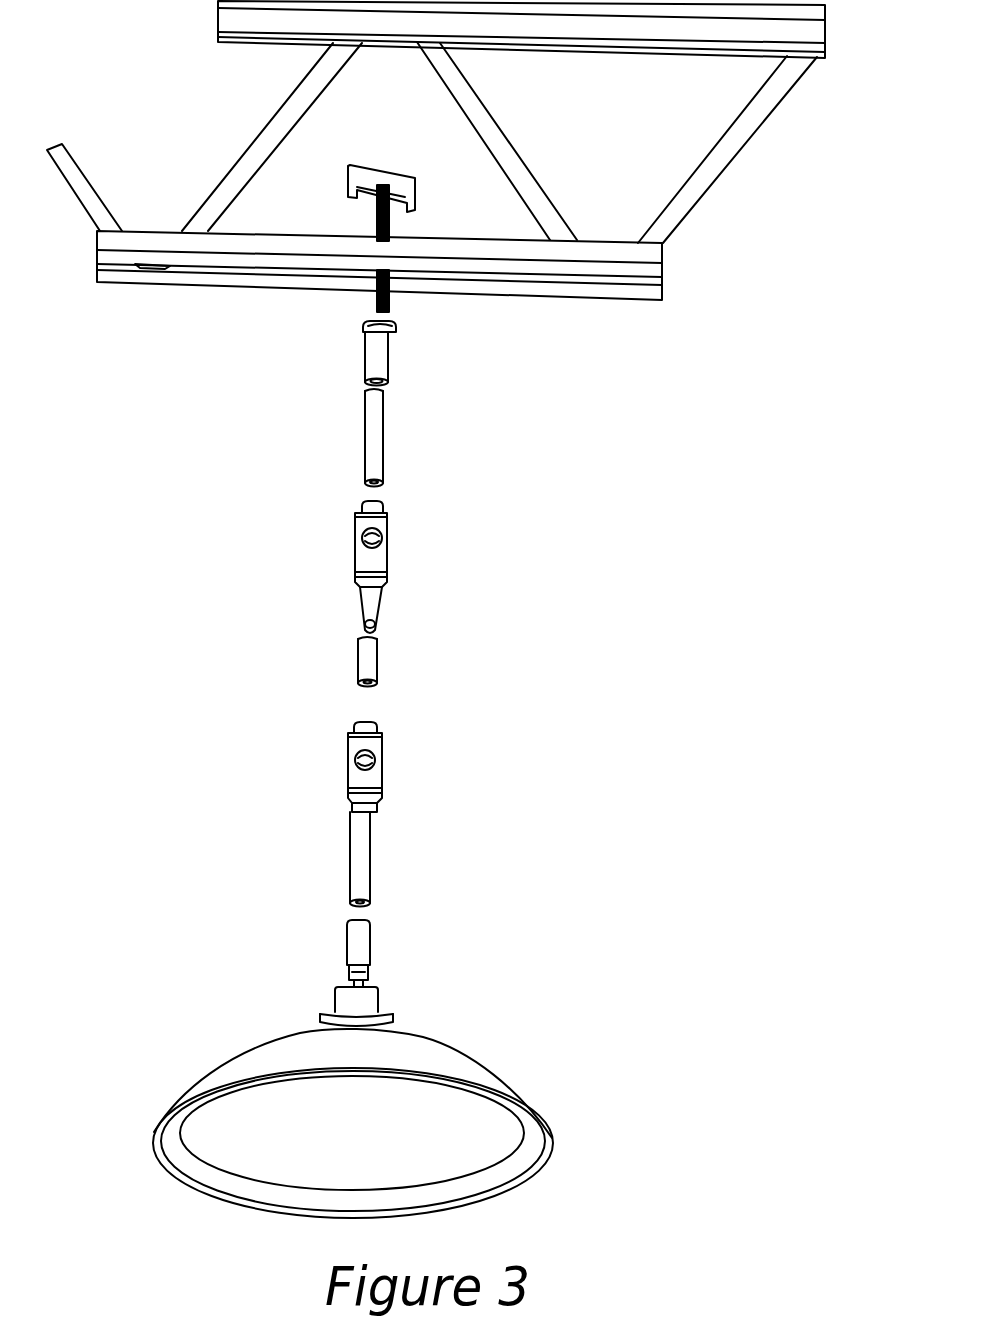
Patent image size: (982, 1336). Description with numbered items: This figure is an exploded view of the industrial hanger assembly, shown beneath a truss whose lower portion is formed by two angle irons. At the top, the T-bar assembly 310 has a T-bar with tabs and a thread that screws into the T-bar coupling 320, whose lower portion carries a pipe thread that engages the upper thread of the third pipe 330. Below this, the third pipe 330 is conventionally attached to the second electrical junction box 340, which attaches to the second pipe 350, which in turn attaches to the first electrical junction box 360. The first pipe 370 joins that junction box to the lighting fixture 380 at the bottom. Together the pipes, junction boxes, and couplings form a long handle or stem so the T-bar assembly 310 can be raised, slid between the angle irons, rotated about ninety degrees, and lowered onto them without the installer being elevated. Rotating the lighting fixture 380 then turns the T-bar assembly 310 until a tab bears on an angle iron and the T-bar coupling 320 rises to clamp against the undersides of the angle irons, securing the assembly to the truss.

The T-bar assembly 310 is at (402, 175).
The T-bar coupling 320 is at (362, 350).
The third pipe 330 is at (383, 435).
The second electrical junction box 340 is at (352, 545).
The second pipe 350 is at (377, 665).
The first electrical junction box 360 is at (348, 767).
The first pipe 370 is at (370, 870).
The lighting fixture 380 is at (272, 1040).